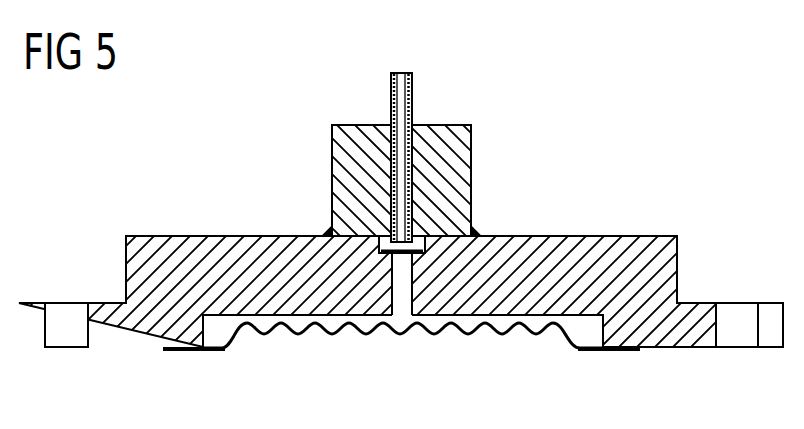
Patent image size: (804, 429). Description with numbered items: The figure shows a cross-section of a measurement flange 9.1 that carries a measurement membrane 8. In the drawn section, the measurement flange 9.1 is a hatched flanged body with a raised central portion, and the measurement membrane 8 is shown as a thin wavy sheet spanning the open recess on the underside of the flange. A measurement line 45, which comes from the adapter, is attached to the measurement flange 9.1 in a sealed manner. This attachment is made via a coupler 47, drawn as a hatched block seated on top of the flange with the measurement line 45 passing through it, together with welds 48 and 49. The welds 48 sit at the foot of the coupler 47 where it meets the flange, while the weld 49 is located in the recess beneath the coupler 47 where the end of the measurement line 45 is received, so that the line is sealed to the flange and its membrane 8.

The measurement flange 9.1 is at (192, 247).
The weld 49 is at (380, 251).
The measurement membrane 8 is at (335, 336).
The coupler 47 is at (463, 163).
The weld 48 is at (476, 229).
The measurement line 45 is at (413, 103).